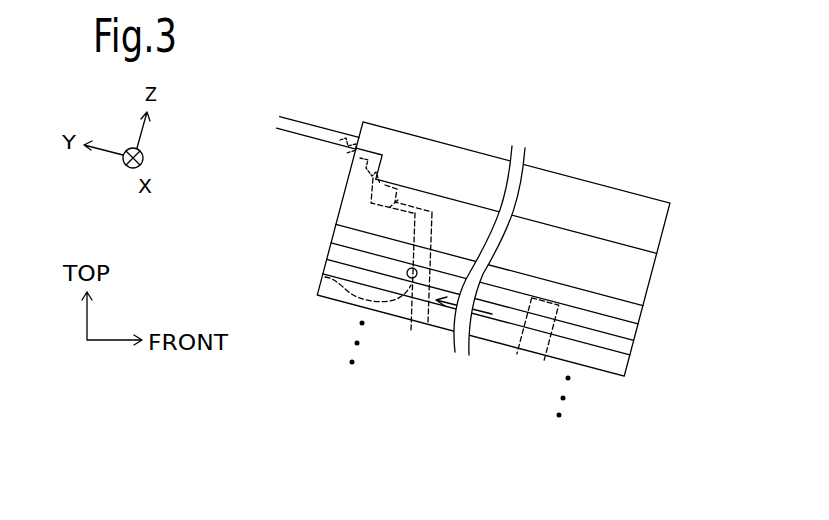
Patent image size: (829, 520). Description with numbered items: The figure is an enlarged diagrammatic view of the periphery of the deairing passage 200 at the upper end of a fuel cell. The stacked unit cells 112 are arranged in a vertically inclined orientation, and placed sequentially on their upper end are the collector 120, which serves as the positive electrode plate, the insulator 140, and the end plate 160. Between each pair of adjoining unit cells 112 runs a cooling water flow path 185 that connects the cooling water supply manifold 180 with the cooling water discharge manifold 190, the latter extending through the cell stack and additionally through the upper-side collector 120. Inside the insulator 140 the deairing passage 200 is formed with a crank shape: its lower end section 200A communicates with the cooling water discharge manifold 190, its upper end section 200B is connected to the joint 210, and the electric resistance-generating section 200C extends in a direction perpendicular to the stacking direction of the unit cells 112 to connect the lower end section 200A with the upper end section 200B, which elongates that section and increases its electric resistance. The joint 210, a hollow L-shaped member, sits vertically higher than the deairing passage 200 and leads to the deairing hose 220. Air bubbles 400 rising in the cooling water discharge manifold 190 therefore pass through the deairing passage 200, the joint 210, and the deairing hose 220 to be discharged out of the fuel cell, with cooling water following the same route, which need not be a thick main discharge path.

The unit cell 112 is at (343, 252).
The collector 120 is at (620, 315).
The insulator 140 is at (628, 277).
The end plate 160 is at (642, 230).
The cooling water supply manifold 180 is at (476, 311).
The cooling water flow path 185 is at (507, 318).
The cooling water discharge manifold 190 is at (325, 277).
The deairing passage 200 is at (398, 200).
The lower end section 200A is at (431, 250).
The upper end section 200B is at (365, 197).
The electric resistance-generating section 200C is at (413, 222).
The joint 210 is at (378, 143).
The deairing hose 220 is at (327, 128).
The air bubbles 400 is at (413, 280).